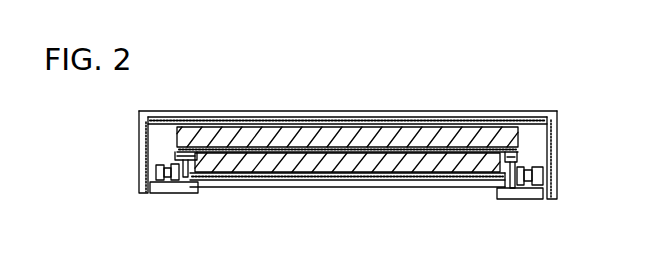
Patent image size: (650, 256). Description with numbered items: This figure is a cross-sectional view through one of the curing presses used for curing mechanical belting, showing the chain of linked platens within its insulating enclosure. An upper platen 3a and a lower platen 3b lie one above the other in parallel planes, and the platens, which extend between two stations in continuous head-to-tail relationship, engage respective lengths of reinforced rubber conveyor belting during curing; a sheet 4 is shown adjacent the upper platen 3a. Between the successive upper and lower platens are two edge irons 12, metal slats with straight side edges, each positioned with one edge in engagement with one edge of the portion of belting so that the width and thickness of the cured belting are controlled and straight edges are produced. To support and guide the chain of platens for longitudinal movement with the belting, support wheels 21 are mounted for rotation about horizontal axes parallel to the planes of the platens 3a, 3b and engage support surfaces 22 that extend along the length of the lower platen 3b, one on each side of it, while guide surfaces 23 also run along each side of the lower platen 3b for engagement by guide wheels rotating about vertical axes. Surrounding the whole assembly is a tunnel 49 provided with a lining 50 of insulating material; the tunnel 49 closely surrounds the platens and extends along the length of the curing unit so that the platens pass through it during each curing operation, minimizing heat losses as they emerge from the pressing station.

The upper platen 3a is at (350, 131).
The lower platen 3b is at (342, 166).
The cover sheet 4 is at (464, 124).
The edge iron 12 is at (207, 147).
The support wheel 21 is at (514, 184).
The support surface 22 is at (521, 167).
The guide surface 23 is at (500, 168).
The tunnel 49 is at (143, 115).
The lining 50 is at (146, 151).